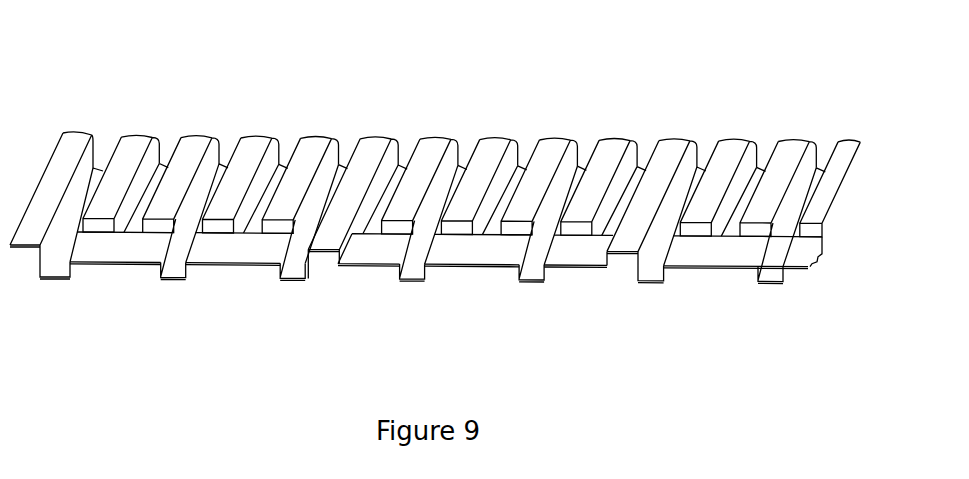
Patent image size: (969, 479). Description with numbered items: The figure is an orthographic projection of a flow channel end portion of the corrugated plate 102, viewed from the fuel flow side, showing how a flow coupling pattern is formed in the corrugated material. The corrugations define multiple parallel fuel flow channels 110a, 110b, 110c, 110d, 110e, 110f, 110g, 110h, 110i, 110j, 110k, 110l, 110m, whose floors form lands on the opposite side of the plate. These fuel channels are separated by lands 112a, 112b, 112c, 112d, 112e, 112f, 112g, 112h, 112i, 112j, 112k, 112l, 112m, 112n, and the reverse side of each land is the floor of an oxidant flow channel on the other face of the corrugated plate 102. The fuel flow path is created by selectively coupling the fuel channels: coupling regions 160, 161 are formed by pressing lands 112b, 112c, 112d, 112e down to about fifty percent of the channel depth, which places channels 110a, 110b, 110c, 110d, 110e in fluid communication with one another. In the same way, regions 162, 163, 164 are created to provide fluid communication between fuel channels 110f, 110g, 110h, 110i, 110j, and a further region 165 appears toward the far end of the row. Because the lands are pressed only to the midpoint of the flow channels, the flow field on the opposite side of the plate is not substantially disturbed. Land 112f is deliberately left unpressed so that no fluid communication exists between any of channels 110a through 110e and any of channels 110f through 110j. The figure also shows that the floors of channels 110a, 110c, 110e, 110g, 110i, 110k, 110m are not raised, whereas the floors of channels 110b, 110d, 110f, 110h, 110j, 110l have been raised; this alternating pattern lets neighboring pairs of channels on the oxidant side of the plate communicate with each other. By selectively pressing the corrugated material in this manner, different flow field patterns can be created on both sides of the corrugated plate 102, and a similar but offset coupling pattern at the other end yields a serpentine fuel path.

The corrugated plate 102 is at (447, 204).
The fuel flow channel 110a is at (108, 150).
The fuel flow channel 110b is at (168, 150).
The fuel flow channel 110c is at (227, 150).
The fuel flow channel 110d is at (287, 150).
The fuel flow channel 110e is at (347, 150).
The fuel flow channel 110f is at (407, 150).
The fuel flow channel 110g is at (466, 150).
The fuel flow channel 110h is at (526, 150).
The fuel flow channel 110i is at (586, 150).
The fuel flow channel 110j is at (646, 150).
The fuel flow channel 110k is at (705, 150).
The fuel flow channel 110l is at (765, 150).
The fuel flow channel 110m is at (825, 150).
The land 112a is at (76, 150).
The land 112b is at (136, 150).
The land 112c is at (195, 150).
The land 112d is at (255, 150).
The land 112e is at (315, 150).
The land 112f is at (375, 150).
The land 112g is at (434, 150).
The land 112h is at (494, 150).
The land 112i is at (554, 150).
The land 112j is at (614, 150).
The land 112k is at (673, 150).
The land 112l is at (733, 150).
The land 112m is at (793, 150).
The land 112n is at (852, 150).
The coupling region 160 is at (115, 250).
The coupling region 161 is at (236, 251).
The coupling region 162 is at (368, 252).
The coupling region 163 is at (473, 253).
The coupling region 164 is at (578, 253).
The coupling region 165 is at (713, 254).